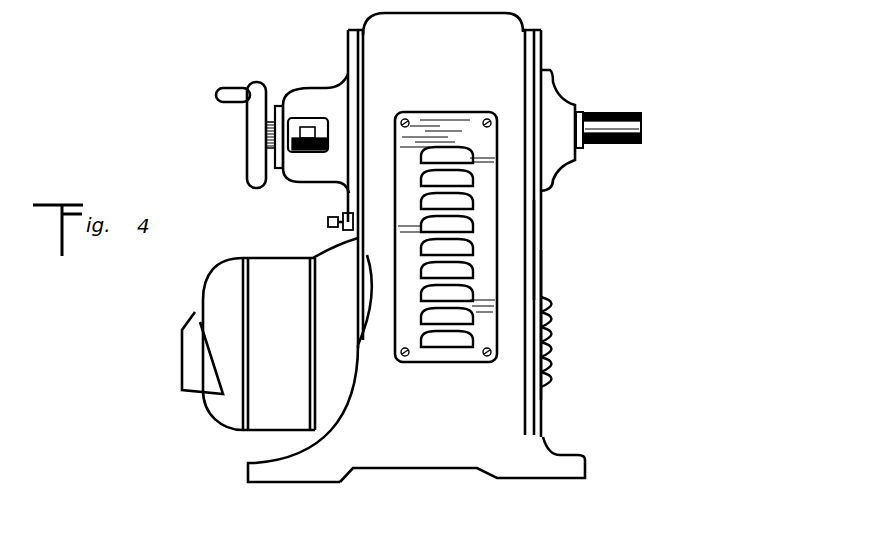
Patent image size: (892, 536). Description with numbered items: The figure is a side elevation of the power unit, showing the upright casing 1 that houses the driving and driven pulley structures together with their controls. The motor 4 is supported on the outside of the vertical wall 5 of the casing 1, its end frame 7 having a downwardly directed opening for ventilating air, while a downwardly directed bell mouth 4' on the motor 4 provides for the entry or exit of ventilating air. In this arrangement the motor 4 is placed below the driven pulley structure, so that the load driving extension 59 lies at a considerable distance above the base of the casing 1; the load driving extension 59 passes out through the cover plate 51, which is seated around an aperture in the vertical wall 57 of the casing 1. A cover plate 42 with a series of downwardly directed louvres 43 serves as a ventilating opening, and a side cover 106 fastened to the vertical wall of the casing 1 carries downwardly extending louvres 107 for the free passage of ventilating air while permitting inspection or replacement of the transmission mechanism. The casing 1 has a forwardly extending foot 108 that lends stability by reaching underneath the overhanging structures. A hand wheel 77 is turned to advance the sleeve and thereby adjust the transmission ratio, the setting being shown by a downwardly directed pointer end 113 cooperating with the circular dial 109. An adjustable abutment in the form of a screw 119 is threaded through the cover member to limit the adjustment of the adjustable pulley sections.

The upright casing 1 is at (431, 455).
The motor 4 is at (259, 344).
The bell mouth 4' is at (184, 380).
The vertical wall 5 is at (352, 239).
The end frame 7 is at (343, 368).
The cover plate 42 is at (543, 277).
The louvres 43 is at (558, 347).
The cover plate 51 is at (540, 48).
The vertical wall 57 is at (537, 236).
The load driving extension 59 is at (641, 133).
The hand wheel 77 is at (252, 132).
The side cover 106 is at (498, 226).
The louvres 107 is at (450, 333).
The foot 108 is at (267, 473).
The circular dial 109 is at (297, 153).
The pointer end 113 is at (332, 112).
The screw 119 is at (327, 222).